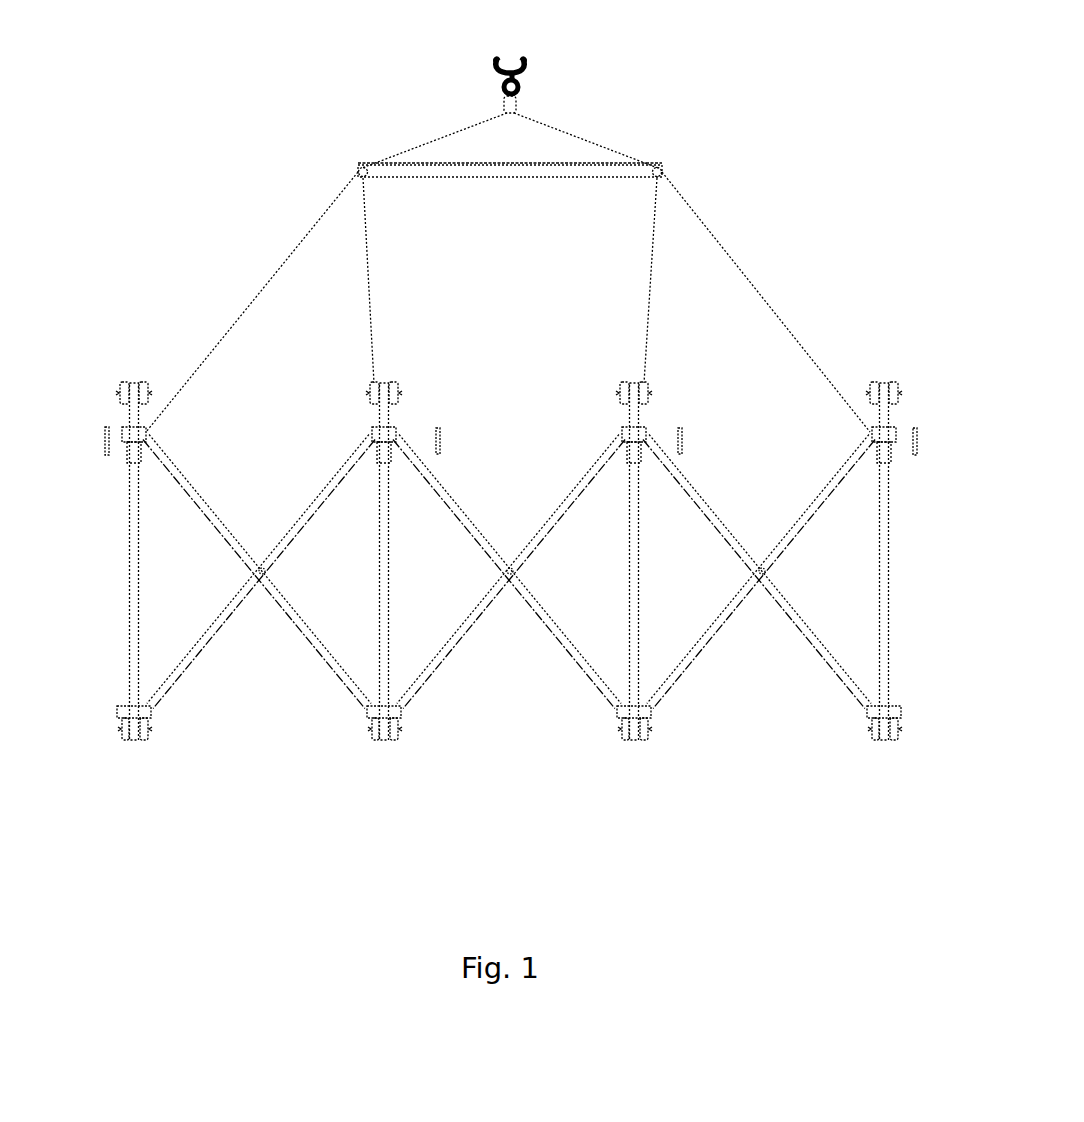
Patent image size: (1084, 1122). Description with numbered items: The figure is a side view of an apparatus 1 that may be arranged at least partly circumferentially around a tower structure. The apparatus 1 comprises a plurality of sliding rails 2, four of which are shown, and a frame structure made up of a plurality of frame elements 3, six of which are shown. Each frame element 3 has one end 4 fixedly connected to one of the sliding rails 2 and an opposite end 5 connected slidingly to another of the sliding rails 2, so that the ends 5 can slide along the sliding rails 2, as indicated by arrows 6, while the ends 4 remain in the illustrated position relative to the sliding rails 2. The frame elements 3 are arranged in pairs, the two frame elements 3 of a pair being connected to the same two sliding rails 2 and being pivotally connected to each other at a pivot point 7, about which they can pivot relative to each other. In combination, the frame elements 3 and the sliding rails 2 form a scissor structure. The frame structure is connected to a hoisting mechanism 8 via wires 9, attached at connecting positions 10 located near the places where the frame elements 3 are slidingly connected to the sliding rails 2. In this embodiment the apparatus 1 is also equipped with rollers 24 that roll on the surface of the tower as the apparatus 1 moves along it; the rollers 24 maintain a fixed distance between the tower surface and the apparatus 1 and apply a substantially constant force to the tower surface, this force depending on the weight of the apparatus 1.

The apparatus 1 is at (813, 202).
The sliding rail 2 is at (130, 548).
The frame element 3 is at (509, 572).
The end 4 is at (510, 764).
The opposite end 5 is at (360, 447).
The arrows 6 is at (105, 442).
The pivot point 7 is at (260, 573).
The hoisting mechanism 8 is at (620, 100).
The wires 9 is at (743, 272).
The connecting positions 10 is at (378, 432).
The rollers 24 is at (125, 385).